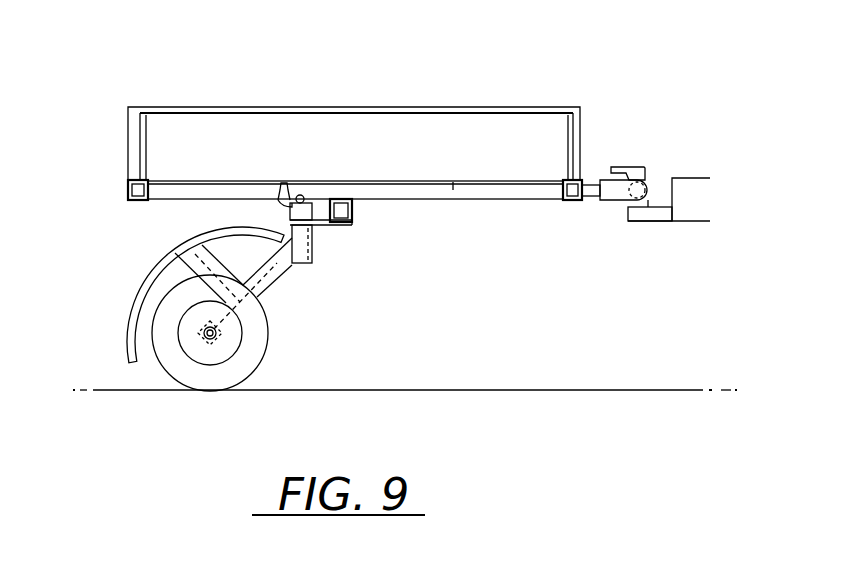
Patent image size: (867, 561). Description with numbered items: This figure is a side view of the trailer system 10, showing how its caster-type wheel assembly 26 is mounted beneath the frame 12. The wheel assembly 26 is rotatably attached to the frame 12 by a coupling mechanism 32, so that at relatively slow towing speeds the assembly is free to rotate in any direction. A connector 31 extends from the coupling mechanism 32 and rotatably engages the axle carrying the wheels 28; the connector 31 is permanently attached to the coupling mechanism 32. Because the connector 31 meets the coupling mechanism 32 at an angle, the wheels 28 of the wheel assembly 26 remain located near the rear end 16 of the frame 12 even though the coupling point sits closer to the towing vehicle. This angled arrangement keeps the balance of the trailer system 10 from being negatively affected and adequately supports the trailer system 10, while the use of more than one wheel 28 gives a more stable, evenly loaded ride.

The trailer system 10 is at (187, 86).
The frame 12 is at (551, 207).
The rear end 16 is at (127, 184).
The wheel assembly 26 is at (160, 252).
The wheels 28 is at (258, 340).
The connector 31 is at (294, 268).
The coupling mechanism 32 is at (313, 237).